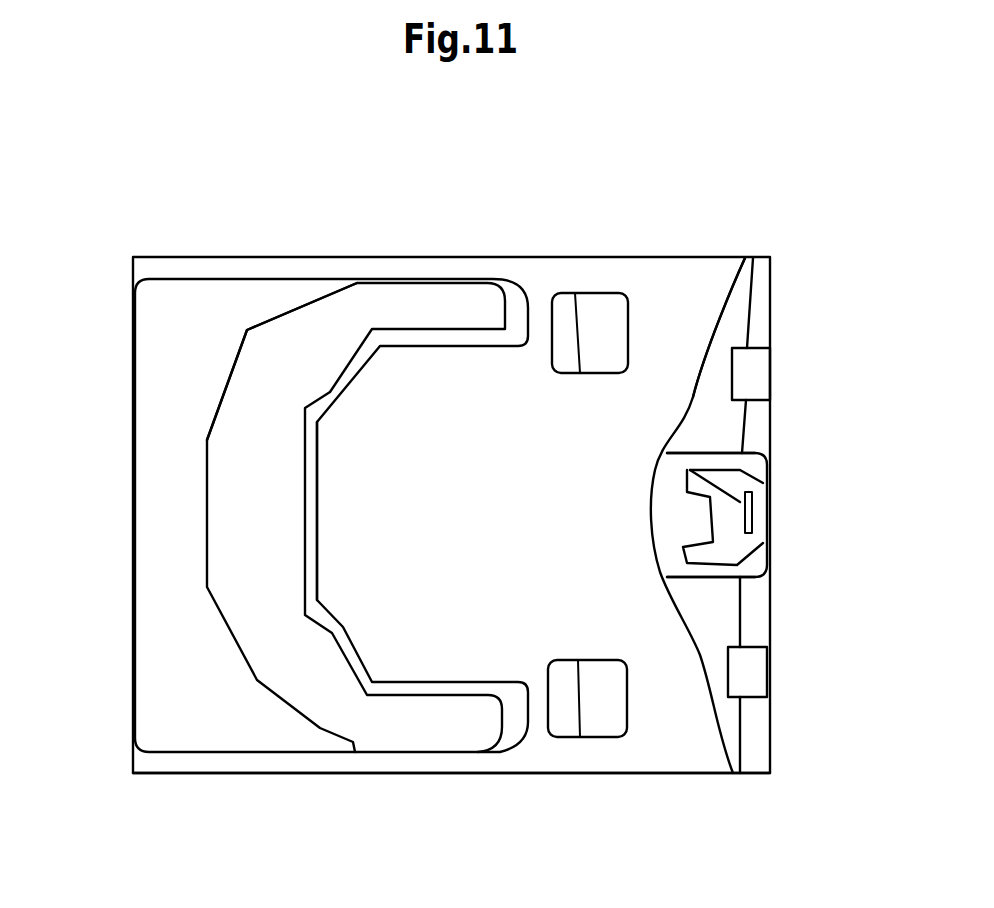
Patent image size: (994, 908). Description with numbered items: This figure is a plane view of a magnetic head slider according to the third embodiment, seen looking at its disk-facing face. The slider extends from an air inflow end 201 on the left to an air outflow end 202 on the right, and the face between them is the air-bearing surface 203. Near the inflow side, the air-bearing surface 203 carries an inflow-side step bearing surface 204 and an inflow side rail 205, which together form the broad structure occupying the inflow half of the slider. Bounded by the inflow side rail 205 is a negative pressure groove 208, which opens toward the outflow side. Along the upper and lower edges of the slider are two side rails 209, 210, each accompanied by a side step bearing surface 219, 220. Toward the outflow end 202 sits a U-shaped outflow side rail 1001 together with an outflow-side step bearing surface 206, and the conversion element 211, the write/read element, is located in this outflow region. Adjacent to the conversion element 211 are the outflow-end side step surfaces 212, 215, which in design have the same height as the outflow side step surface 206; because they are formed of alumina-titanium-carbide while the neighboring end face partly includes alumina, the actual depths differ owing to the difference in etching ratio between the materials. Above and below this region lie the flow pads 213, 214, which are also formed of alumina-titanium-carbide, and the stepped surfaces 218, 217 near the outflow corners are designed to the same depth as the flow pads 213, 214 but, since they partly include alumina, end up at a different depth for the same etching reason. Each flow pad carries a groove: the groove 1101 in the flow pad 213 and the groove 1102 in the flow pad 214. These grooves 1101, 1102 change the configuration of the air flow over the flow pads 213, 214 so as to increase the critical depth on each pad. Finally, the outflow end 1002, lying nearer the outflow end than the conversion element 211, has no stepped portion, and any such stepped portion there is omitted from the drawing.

The air inflow end 201 is at (123, 348).
The air outflow end 202 is at (767, 303).
The air-bearing surface 203 is at (257, 765).
The inflow-side step bearing surface 204 is at (196, 370).
The inflow side rail 205 is at (290, 357).
The outflow-side step bearing surface 206 is at (655, 503).
The negative pressure groove 208 is at (362, 505).
The side rail 209 is at (615, 327).
The side rail 210 is at (600, 718).
The conversion element 211 is at (662, 455).
The outflow-end side step surface 212 is at (735, 462).
The flow pad 213 is at (732, 330).
The flow pad 214 is at (708, 625).
The outflow-end side step surface 215 is at (710, 575).
The stepped surface 217 is at (750, 733).
The stepped surface 218 is at (762, 312).
The side step bearing surface 219 is at (560, 330).
The side step bearing surface 220 is at (553, 707).
The U-shaped outflow side rail 1001 is at (717, 515).
The outflow end 1002 is at (770, 513).
The groove 1101 is at (765, 383).
The groove 1102 is at (750, 667).